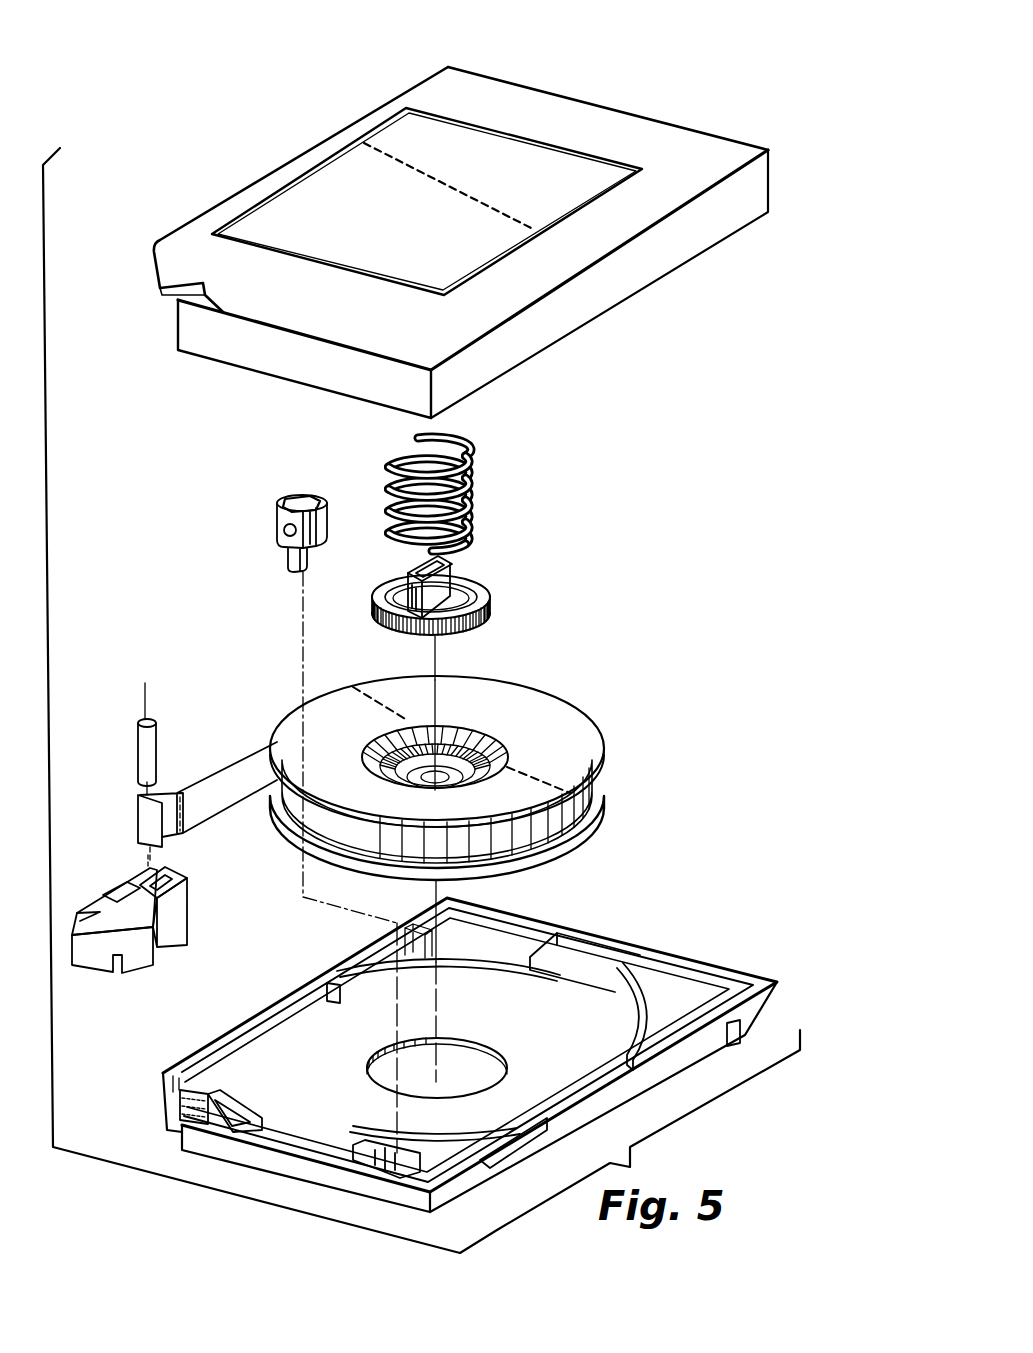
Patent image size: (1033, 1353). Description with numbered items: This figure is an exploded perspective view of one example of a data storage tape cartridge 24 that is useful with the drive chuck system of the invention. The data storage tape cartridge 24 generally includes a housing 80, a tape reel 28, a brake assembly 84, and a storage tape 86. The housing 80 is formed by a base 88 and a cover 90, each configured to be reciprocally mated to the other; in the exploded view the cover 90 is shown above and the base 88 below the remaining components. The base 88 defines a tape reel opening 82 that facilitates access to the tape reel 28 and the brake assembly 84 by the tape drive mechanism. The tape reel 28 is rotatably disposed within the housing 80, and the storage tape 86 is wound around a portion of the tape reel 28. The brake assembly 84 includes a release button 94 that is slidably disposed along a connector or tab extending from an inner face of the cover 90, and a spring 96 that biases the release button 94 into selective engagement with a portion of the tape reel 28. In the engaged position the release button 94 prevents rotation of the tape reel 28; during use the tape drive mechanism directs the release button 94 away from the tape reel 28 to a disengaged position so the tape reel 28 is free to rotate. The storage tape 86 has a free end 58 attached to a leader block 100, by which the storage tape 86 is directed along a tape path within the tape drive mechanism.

The data storage tape cartridge 24 is at (700, 50).
The cover 90 is at (577, 120).
The housing 80 is at (708, 922).
The spring 96 is at (470, 457).
The brake assembly 84 is at (543, 510).
The release button 94 is at (478, 594).
The tape reel 28 is at (543, 693).
The storage tape 86 is at (242, 768).
The free end 58 is at (150, 818).
The leader block 100 is at (190, 897).
The base 88 is at (608, 942).
The tape reel opening 82 is at (485, 1047).